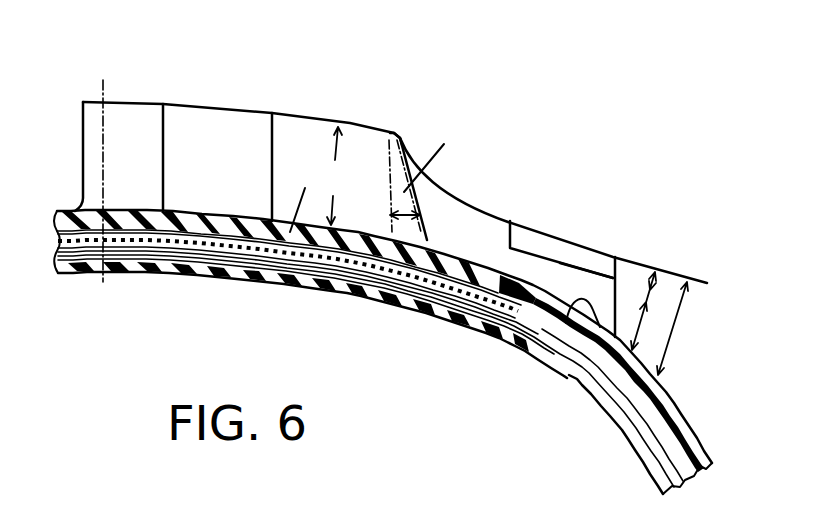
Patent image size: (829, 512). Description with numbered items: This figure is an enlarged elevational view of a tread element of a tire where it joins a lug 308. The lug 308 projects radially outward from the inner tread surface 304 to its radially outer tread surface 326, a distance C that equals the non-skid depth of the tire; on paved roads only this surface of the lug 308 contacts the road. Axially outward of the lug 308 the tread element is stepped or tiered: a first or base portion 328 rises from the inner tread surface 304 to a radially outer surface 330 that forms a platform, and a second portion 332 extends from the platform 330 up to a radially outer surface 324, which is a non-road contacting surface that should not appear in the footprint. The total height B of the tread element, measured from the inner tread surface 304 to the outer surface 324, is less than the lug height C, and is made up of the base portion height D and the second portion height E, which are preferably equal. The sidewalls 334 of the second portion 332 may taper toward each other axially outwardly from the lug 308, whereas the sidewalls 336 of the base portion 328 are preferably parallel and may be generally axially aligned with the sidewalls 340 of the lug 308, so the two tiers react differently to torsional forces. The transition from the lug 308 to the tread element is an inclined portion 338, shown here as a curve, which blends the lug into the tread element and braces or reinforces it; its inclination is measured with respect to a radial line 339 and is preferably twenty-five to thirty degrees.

The inner tread surface 304 is at (583, 345).
The secondary lug 308 is at (218, 104).
The radially outer surface of the tread element 324 is at (584, 243).
The radially outer tread surface of the lug 326 is at (350, 123).
The base portion 328 is at (536, 271).
The radially outer surface of the base portion 330 is at (523, 246).
The second portion 332 is at (618, 260).
The sidewalls of the second portion 334 is at (553, 242).
The sidewalls of the base portion 336 is at (510, 265).
The inclined portion 338 is at (409, 180).
The radial line 339 is at (383, 131).
The sidewalls of the lug 340 is at (305, 188).
The radially outward projection of the lugs C is at (332, 176).
The tread element height B is at (673, 327).
The height of the base portion D is at (645, 356).
The height of the second portion E is at (657, 280).